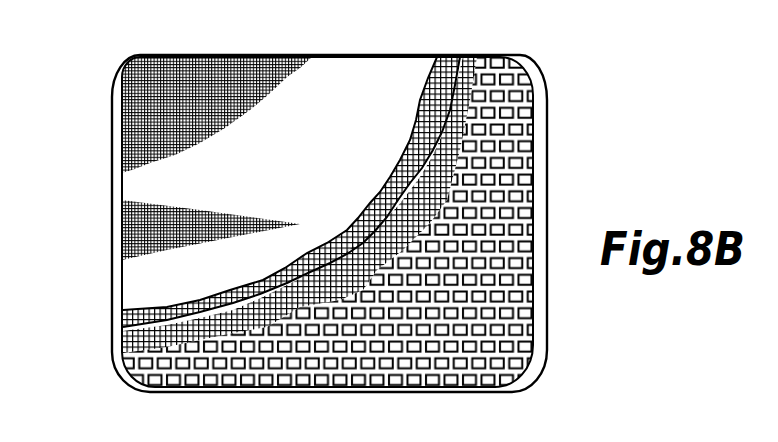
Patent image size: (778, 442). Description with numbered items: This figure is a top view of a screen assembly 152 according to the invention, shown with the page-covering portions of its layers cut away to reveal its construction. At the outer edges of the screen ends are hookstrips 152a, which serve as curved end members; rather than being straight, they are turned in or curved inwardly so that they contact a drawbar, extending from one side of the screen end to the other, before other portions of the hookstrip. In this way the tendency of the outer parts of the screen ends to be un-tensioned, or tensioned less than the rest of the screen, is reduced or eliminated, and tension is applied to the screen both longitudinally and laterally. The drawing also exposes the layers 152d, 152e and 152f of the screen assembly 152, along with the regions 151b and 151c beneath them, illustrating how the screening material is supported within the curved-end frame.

The screen assembly 152 is at (546, 118).
The hookstrip 152a is at (134, 58).
The intermediate layer 152d is at (412, 232).
The layer boundary 152e is at (297, 267).
The top layer 152f is at (202, 93).
The strip support 151b is at (393, 360).
The middle layer 151c is at (158, 340).